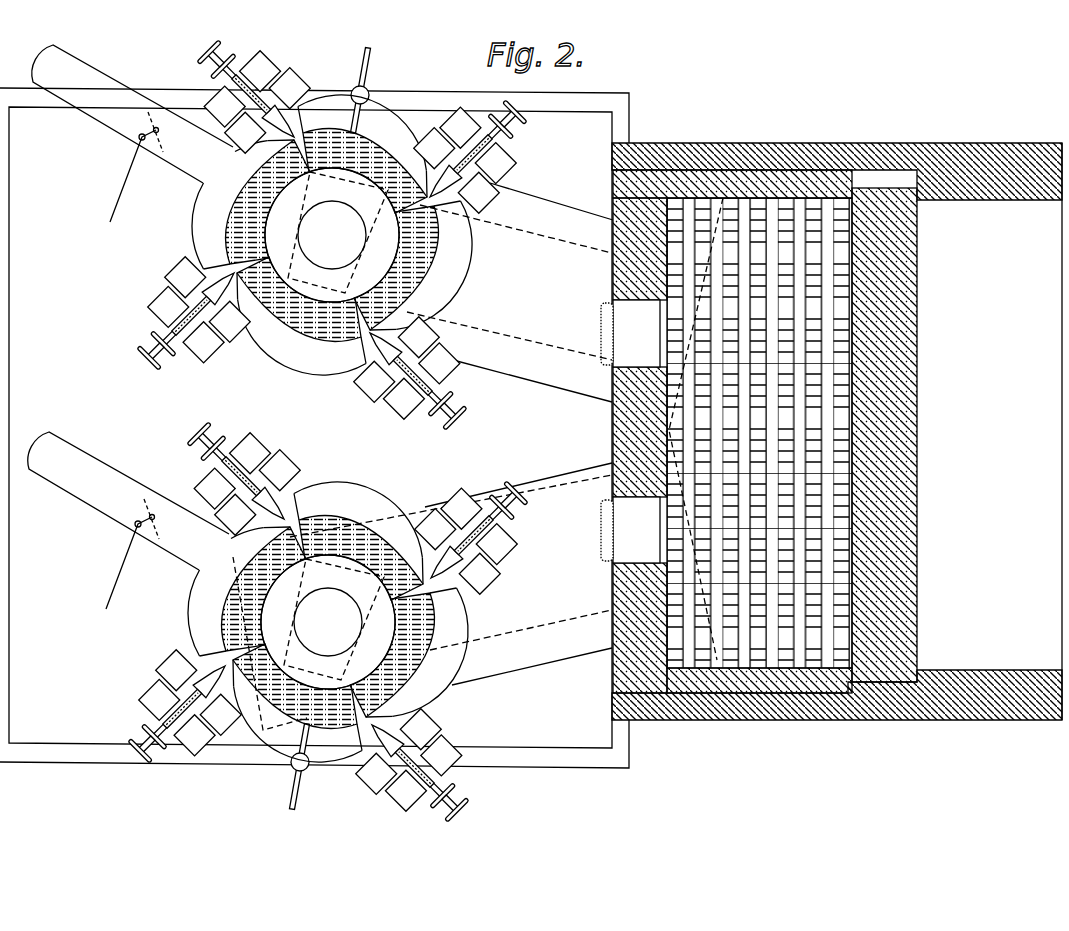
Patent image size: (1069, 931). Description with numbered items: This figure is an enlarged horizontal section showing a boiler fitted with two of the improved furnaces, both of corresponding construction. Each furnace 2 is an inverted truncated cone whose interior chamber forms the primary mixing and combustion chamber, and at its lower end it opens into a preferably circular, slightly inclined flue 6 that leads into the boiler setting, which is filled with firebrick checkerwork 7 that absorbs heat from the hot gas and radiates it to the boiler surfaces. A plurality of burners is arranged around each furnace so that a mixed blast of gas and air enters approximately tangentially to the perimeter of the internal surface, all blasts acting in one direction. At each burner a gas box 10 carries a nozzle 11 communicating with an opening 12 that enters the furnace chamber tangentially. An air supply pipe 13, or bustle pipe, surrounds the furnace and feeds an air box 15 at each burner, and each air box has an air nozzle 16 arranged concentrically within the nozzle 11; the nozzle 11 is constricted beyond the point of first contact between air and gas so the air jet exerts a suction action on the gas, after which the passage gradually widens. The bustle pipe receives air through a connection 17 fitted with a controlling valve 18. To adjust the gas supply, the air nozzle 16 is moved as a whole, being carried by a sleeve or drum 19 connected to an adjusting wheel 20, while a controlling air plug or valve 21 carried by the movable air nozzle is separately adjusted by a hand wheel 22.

The furnace 2 is at (180, 613).
The flue 6 is at (451, 434).
The firebrick checkerwork 7 is at (840, 370).
The gas box 10 is at (487, 197).
The nozzle 11 is at (412, 219).
The opening 12 is at (432, 235).
The air supply pipe 13 is at (463, 272).
The air box 15 is at (507, 170).
The air nozzle 16 is at (438, 172).
The connection 17 is at (112, 90).
The controlling valve 18 is at (153, 150).
The sleeve or drum 19 is at (495, 182).
The adjusting wheel 20 is at (519, 135).
The controlling air plug or valve 21 is at (433, 165).
The hand wheel 22 is at (513, 103).